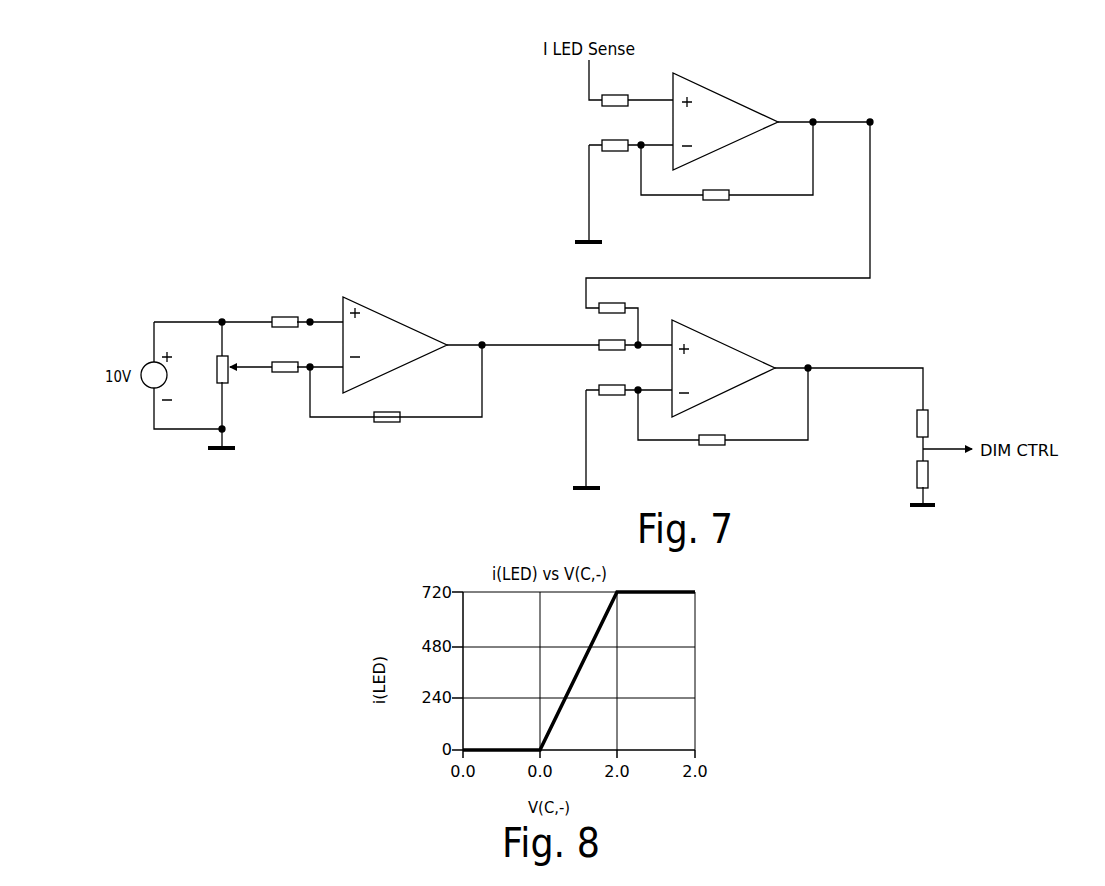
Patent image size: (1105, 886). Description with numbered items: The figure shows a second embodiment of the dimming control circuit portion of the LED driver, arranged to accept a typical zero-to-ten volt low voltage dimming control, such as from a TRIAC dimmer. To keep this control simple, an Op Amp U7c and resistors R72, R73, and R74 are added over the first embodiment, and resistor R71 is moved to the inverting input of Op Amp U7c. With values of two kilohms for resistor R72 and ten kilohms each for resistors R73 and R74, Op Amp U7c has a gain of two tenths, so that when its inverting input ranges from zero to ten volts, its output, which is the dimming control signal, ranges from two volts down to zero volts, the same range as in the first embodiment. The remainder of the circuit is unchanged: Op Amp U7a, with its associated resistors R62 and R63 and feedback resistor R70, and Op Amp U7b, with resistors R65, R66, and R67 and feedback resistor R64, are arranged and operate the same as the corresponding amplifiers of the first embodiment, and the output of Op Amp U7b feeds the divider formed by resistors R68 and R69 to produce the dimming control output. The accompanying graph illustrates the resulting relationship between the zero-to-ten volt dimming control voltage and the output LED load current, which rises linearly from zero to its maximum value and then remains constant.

The resistor R62 is at (616, 92).
The resistor R63 is at (616, 136).
The feedback resistor R70 is at (717, 205).
The Op Amp U7A U7a is at (725, 121).
The resistor R65 is at (613, 298).
The resistor R66 is at (613, 356).
The resistor R67 is at (613, 402).
The Op Amp U7B U7b is at (723, 368).
The feedback resistor R64 is at (713, 450).
The resistor R68 is at (938, 423).
The resistor R69 is at (938, 474).
The resistor R71 is at (230, 375).
The resistor R73 is at (286, 332).
The resistor R74 is at (286, 379).
The Op Amp U7C U7c is at (395, 345).
The resistor R72 is at (388, 429).